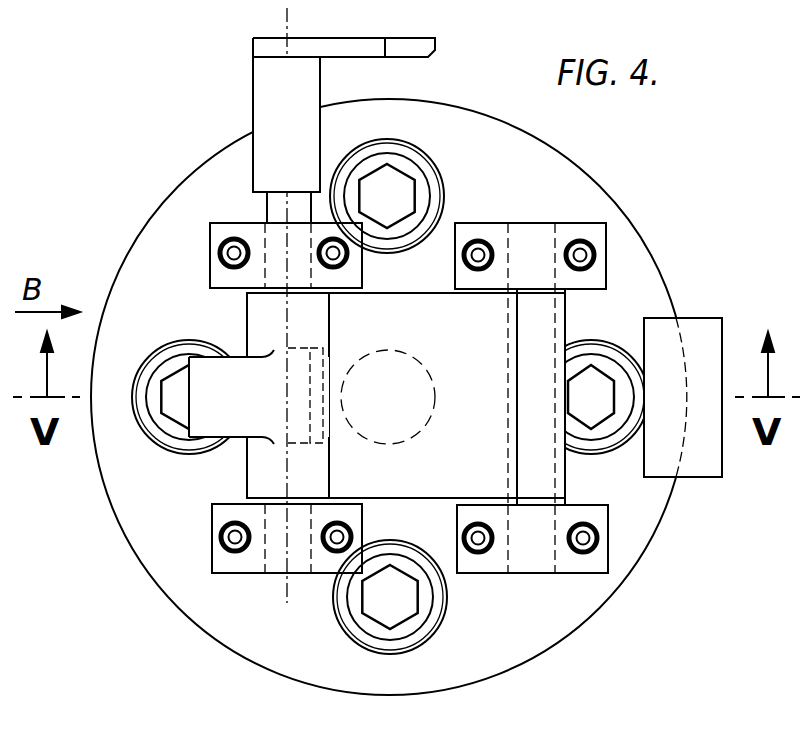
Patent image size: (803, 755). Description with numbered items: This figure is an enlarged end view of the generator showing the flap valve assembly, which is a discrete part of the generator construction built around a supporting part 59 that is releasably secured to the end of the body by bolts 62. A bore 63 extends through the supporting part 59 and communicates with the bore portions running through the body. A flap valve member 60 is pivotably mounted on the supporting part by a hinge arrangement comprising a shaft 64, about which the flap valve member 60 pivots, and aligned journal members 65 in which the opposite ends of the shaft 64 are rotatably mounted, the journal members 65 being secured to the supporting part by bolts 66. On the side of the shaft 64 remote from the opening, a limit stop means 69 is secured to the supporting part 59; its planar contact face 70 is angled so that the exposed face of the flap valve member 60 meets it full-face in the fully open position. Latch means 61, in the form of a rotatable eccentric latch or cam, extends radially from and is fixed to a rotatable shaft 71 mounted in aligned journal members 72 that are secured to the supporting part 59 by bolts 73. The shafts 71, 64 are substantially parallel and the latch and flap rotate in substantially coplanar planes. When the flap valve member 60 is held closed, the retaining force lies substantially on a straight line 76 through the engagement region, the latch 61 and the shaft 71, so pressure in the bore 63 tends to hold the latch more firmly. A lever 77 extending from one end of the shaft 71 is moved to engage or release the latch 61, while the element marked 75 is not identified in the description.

The supporting part 59 is at (316, 656).
The flap valve member 60 is at (492, 406).
The latch means 61 is at (215, 418).
The bolts 62 is at (402, 192).
The bore 63 is at (428, 422).
The shaft 64 is at (508, 320).
The journal members 65 is at (588, 228).
The bolts 66 is at (572, 243).
The limit stop means 69 is at (722, 455).
The planar contact face 70 is at (695, 467).
The rotatable shaft 71 is at (272, 207).
The journal members 72 is at (215, 237).
The bolts 73 is at (320, 263).
The slot 75 is at (322, 347).
The straight line 76 is at (290, 520).
The lever 77 is at (436, 55).